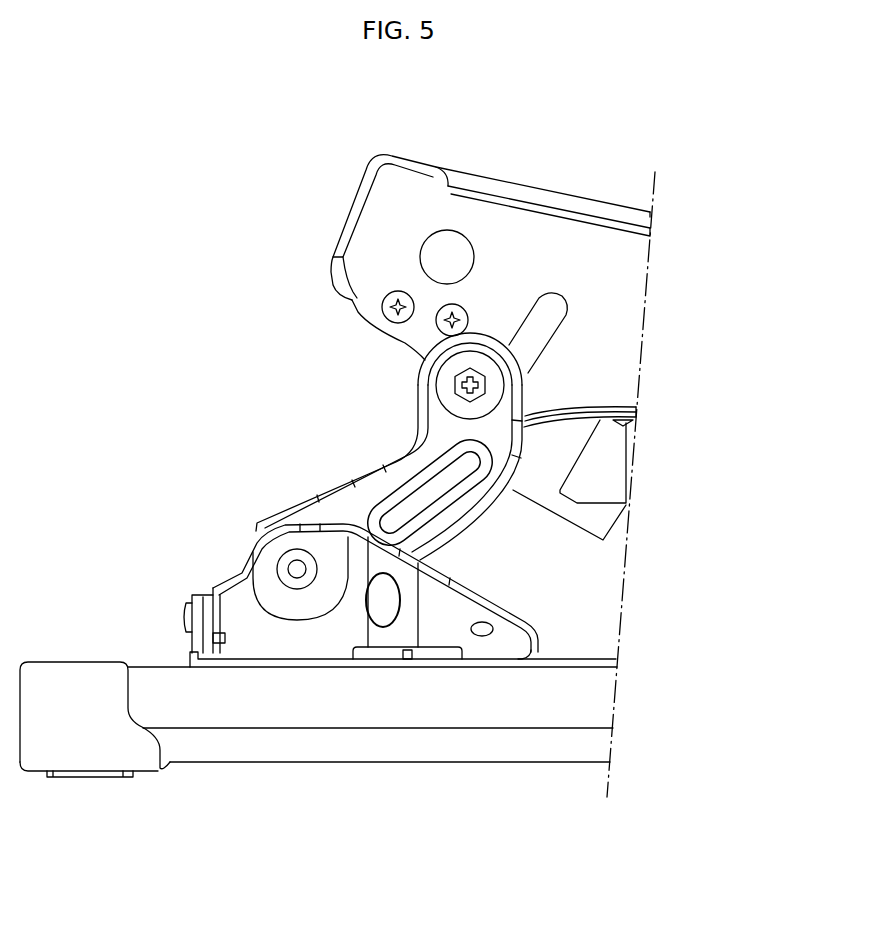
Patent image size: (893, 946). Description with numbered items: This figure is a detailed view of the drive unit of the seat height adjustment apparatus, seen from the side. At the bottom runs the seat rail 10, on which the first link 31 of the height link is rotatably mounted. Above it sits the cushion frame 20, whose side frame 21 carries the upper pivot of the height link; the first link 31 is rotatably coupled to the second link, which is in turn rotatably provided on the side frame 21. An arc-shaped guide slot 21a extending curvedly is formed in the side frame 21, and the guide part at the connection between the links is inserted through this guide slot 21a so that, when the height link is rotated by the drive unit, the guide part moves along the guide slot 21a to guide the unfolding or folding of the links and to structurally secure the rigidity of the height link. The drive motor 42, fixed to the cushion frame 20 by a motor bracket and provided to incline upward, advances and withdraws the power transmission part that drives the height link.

The seat rail 10 is at (311, 711).
The cushion frame 20 is at (358, 184).
The side frame 21 is at (517, 224).
The guide slot 21a is at (551, 310).
The first link 31 is at (387, 487).
The drive motor 42 is at (604, 467).